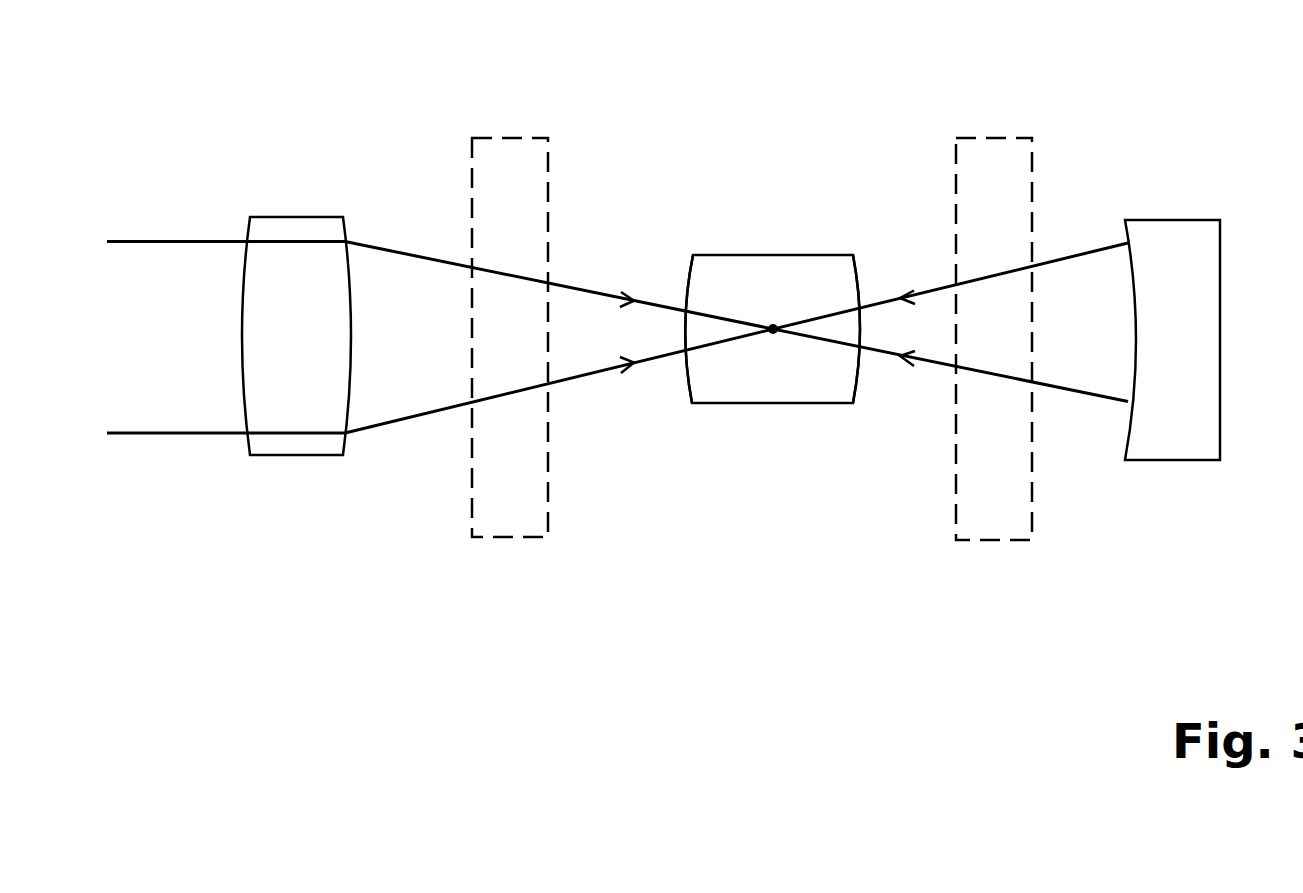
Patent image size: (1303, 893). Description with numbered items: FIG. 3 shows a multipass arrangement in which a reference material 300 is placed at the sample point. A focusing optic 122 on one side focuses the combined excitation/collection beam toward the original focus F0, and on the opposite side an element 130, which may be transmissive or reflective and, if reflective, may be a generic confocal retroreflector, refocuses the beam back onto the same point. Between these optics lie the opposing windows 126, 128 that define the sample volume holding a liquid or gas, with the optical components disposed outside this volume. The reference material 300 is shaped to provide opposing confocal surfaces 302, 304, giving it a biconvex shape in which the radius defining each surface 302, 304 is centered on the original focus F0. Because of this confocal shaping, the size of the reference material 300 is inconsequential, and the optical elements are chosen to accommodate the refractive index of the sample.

The focusing optic 122 is at (288, 217).
The window 126 is at (503, 137).
The window 128 is at (988, 138).
The element 130 is at (1165, 220).
The reference material 300 is at (773, 255).
The confocal surface 302 is at (688, 272).
The confocal surface 304 is at (858, 265).
The original focus F0 is at (775, 334).